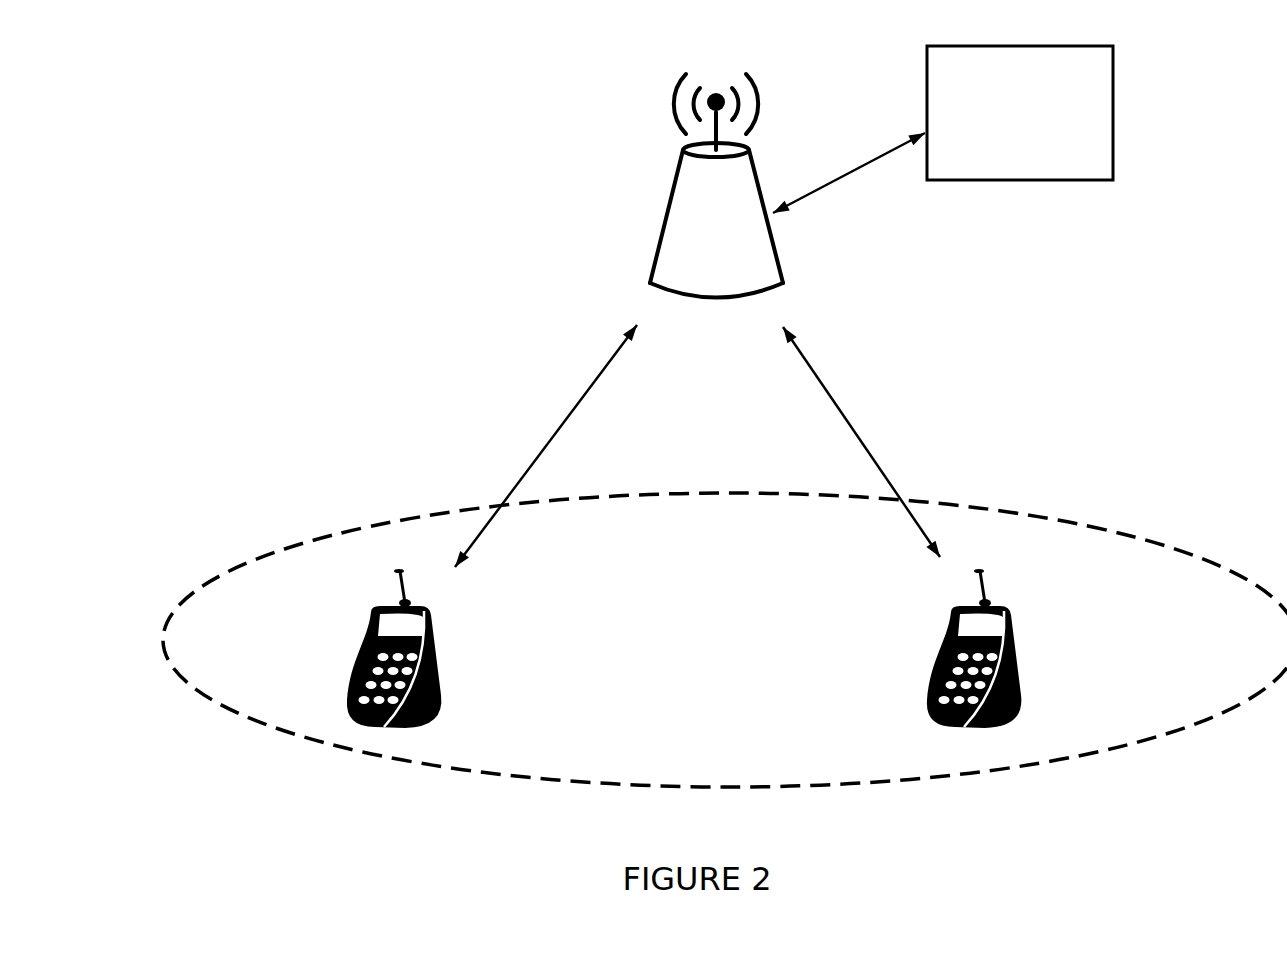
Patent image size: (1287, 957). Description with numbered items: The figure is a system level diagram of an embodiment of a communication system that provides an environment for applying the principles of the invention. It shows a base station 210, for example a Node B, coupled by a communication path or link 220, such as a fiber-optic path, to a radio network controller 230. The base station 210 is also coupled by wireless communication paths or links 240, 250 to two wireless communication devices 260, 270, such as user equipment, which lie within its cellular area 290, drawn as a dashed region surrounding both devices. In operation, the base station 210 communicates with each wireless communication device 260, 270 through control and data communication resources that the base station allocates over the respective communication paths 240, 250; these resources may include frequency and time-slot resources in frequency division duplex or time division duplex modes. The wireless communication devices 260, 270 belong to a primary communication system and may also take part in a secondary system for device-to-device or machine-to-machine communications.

The base station 210 is at (716, 186).
The communication path or link 220 is at (849, 175).
The radio network controller 230 is at (1020, 113).
The wireless communication path or link 240 is at (546, 446).
The wireless communication path or link 250 is at (861, 442).
The wireless communication device 260 is at (350, 630).
The wireless communication device 270 is at (1043, 655).
The cellular area 290 is at (725, 640).